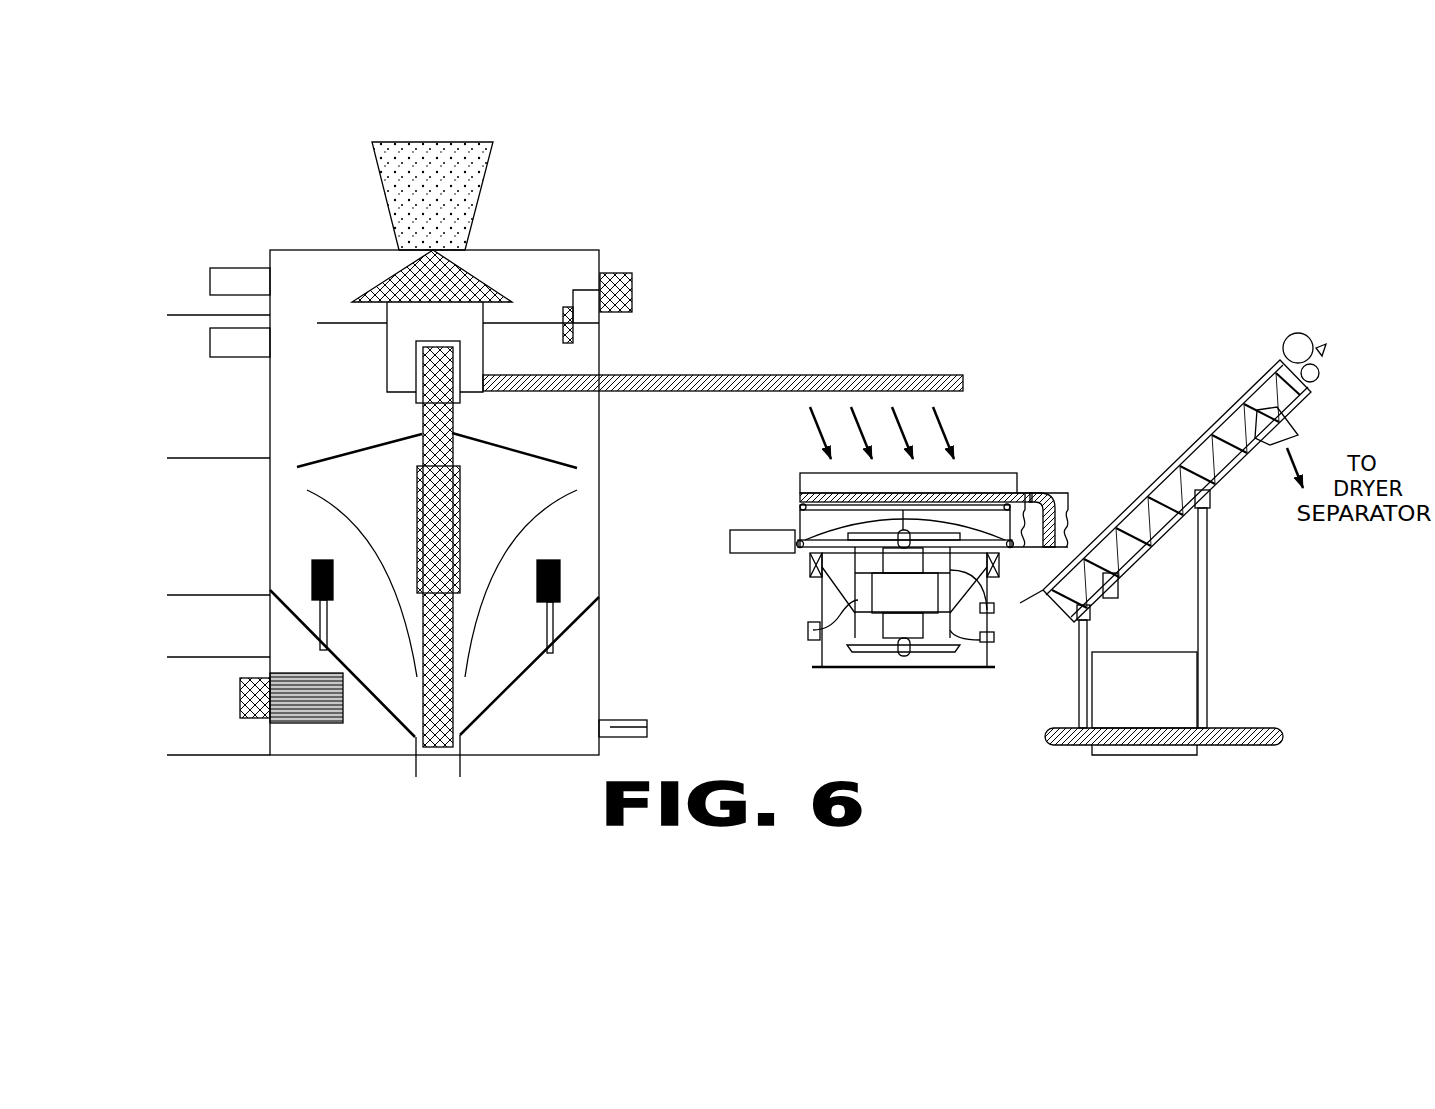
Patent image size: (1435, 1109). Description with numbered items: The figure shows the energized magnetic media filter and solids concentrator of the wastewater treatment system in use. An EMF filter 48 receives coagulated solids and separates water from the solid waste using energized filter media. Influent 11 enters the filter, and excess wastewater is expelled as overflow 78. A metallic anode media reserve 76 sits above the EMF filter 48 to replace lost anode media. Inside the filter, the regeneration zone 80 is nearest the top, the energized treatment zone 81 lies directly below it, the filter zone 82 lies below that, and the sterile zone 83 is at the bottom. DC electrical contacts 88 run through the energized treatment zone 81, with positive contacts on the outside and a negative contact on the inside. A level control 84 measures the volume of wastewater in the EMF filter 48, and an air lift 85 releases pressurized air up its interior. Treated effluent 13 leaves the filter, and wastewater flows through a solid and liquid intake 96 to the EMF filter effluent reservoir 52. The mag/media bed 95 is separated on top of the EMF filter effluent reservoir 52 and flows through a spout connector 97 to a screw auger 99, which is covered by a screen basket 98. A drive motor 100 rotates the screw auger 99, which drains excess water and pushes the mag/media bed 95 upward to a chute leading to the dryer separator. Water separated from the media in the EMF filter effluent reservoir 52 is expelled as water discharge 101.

The EMF filter 48 is at (580, 206).
The metallic anode media reserve 76 is at (377, 170).
The overflow 78 is at (210, 282).
The influent 11 is at (208, 342).
The regeneration zone 80 is at (233, 458).
The energized treatment zone 81 is at (218, 596).
The filter zone 82 is at (233, 657).
The sterile zone 83 is at (222, 755).
The level control 84 is at (600, 275).
The air lift 85 is at (437, 764).
The DC electrical contacts 88 is at (460, 530).
The effluent 13 is at (647, 727).
The mag/media bed 95 is at (800, 480).
The solid and liquid intake 96 is at (868, 377).
The spout connector 97 is at (1063, 515).
The screen basket 98 is at (1170, 463).
The screw auger 99 is at (1207, 487).
The drive motor 100 is at (1322, 358).
The water discharge 101 is at (757, 567).
The EMF filter effluent reservoir 52 is at (930, 704).